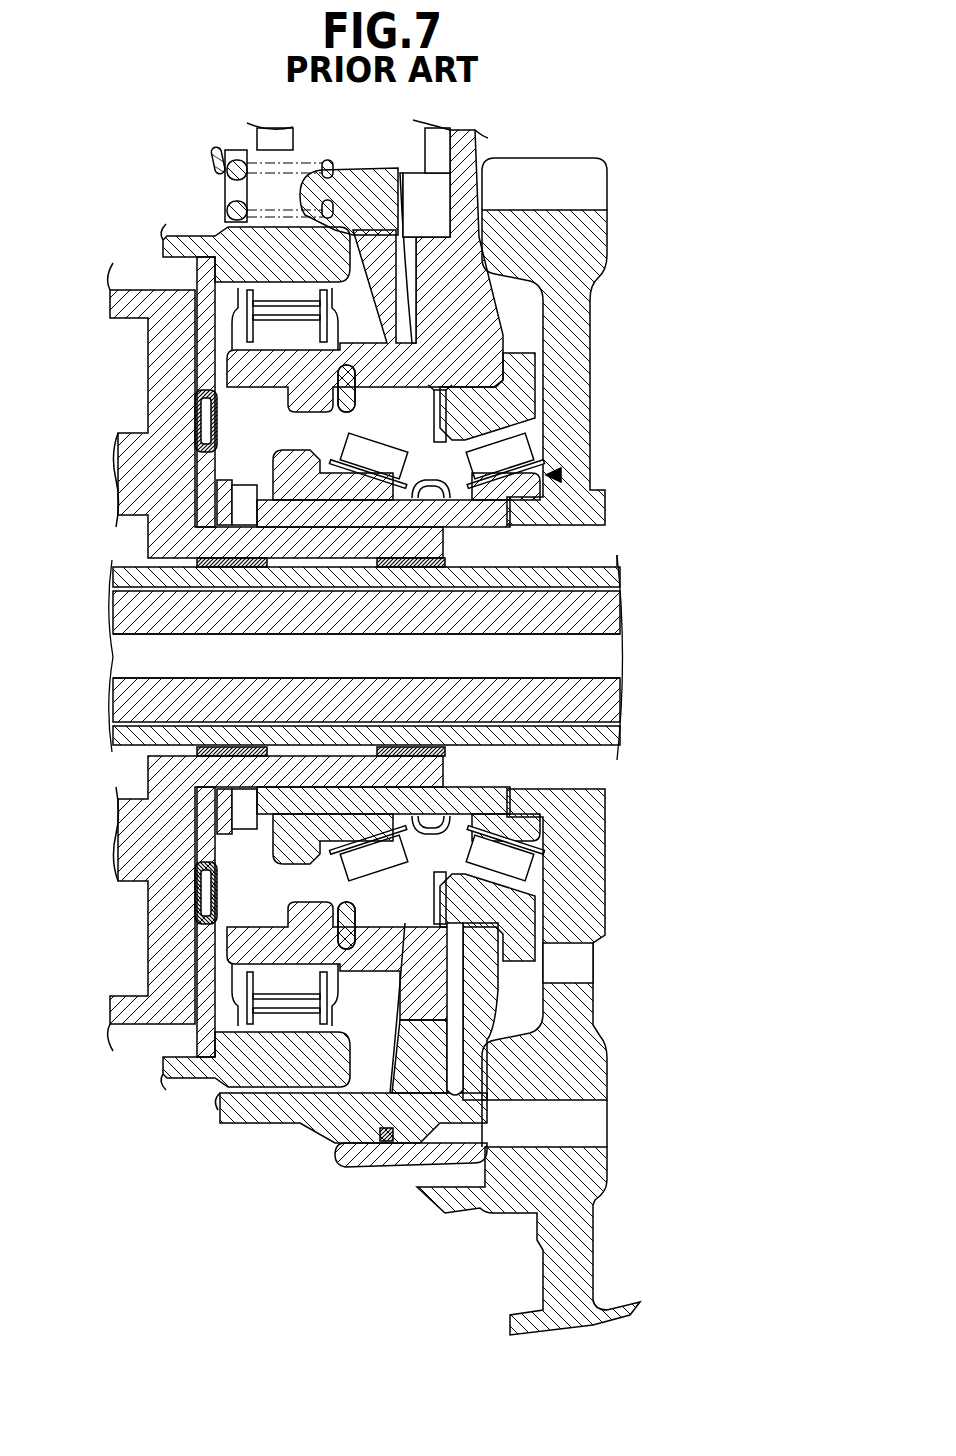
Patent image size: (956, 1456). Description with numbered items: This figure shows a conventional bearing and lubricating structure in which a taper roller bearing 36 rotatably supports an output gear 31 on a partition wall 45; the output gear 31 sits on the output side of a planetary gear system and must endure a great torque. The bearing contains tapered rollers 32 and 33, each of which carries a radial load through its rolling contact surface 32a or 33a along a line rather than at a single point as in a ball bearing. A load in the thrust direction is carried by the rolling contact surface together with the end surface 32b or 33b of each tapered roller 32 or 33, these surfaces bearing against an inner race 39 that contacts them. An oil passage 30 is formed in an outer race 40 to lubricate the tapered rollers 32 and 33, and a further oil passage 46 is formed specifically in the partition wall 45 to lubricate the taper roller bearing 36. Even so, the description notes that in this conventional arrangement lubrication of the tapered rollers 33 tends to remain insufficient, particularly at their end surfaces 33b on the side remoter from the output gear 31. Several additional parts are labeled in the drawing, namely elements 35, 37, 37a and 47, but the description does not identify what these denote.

The oil passage 30 is at (445, 412).
The output gear 31 is at (577, 318).
The tapered roller 32 is at (517, 457).
The rolling contact surface 32a is at (505, 482).
The tapered roller 33 is at (298, 440).
The rolling contact surface 33a is at (656, 548).
The inner race 35 is at (520, 440).
The taper roller bearing 36 is at (561, 475).
The shaft 37 is at (590, 607).
The shaft bore 37a is at (597, 655).
The inner race 39 is at (527, 832).
The end surface 32b is at (533, 862).
The outer race 40 is at (523, 915).
The partition wall 45 is at (480, 290).
The oil passage 46 is at (457, 1007).
The outer ring housing 47 is at (595, 1172).
The end surface 33b is at (222, 912).